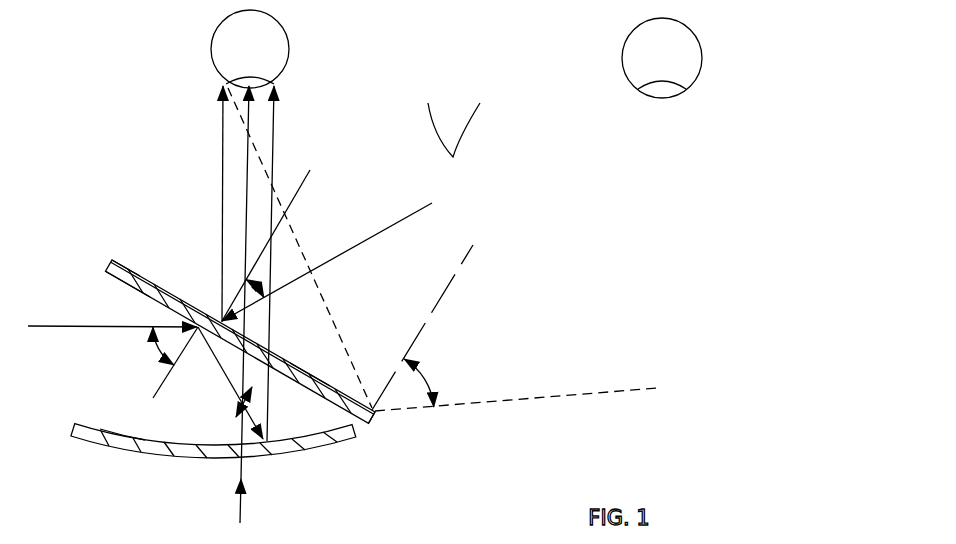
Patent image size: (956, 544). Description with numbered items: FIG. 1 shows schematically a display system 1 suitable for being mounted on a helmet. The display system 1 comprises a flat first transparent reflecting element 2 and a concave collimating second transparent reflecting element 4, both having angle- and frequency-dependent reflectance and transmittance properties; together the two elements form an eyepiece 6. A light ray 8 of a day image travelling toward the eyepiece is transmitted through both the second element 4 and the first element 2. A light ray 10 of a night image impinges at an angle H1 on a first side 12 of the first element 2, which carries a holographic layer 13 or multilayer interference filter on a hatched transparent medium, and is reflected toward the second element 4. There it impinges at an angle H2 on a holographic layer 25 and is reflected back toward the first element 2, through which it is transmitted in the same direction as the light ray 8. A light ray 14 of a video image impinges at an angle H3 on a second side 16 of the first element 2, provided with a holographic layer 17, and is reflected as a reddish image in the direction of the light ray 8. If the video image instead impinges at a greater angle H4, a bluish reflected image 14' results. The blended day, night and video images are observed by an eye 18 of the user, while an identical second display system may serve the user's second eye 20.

The display system 1 is at (395, 480).
The first transparent reflecting element 2 is at (280, 358).
The second transparent reflecting element 4 is at (305, 450).
The eyepiece 6 is at (174, 428).
The light ray of a day image 8 is at (248, 137).
The light ray of a night image 10 is at (274, 122).
The first side 12 is at (130, 289).
The holographic layer 13 is at (145, 293).
The light ray of a video image 14 is at (279, 204).
The bluish reflected image 14' is at (442, 249).
The second side 16 is at (306, 374).
The holographic layer 17 is at (366, 404).
The eye 18 is at (276, 47).
The second eye 20 is at (687, 53).
The holographic layer 25 is at (122, 432).
The angle of incidence H1 is at (155, 350).
The angle of incidence H2 is at (237, 377).
The angle of incidence H3 is at (232, 310).
The angle of incidence H4 is at (433, 382).